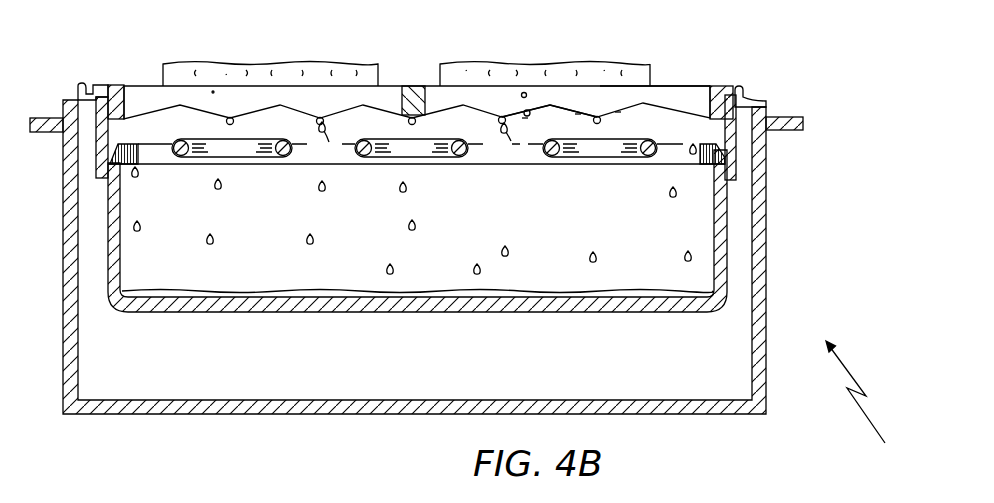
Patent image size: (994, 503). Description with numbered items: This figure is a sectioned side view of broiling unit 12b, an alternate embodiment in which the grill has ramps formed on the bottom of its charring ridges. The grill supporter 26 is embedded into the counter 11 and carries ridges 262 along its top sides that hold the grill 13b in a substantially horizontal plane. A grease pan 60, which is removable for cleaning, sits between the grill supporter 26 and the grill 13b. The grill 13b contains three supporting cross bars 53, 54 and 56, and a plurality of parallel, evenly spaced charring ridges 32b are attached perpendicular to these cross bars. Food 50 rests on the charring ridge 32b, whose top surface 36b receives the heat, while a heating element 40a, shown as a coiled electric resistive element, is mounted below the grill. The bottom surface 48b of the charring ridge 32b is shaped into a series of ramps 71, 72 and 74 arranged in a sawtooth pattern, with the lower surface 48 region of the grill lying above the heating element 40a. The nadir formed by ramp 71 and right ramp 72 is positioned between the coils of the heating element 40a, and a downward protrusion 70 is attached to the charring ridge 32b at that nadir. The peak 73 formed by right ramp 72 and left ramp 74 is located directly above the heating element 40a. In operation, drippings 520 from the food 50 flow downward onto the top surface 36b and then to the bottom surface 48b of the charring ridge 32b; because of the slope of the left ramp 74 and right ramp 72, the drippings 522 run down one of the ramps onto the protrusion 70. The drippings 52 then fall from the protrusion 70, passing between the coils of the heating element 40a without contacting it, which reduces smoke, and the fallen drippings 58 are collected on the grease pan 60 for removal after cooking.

The counter 11 is at (788, 118).
The broiling unit 12b is at (873, 406).
The grill 13b is at (146, 86).
The grill supporter 26 is at (213, 414).
The ridges 262 is at (763, 105).
The charring ridge 32b is at (680, 86).
The top surface 36b is at (320, 86).
The heating element 40a is at (550, 158).
The lower surface 48 is at (347, 167).
The bottom surface 48b is at (137, 123).
The food 50 is at (466, 62).
The drippings 52 is at (180, 250).
The drippings 520 is at (213, 91).
The drippings 522 is at (535, 108).
The supporting cross bar 53 is at (111, 89).
The supporting cross bar 54 is at (411, 89).
The supporting cross bar 56 is at (719, 87).
The drippings 58 is at (565, 293).
The grease pan 60 is at (303, 313).
The downward protrusion 70 is at (597, 114).
The ramp 71 is at (618, 112).
The right ramp 72 is at (578, 113).
The peak 73 is at (553, 106).
The left ramp 74 is at (525, 115).